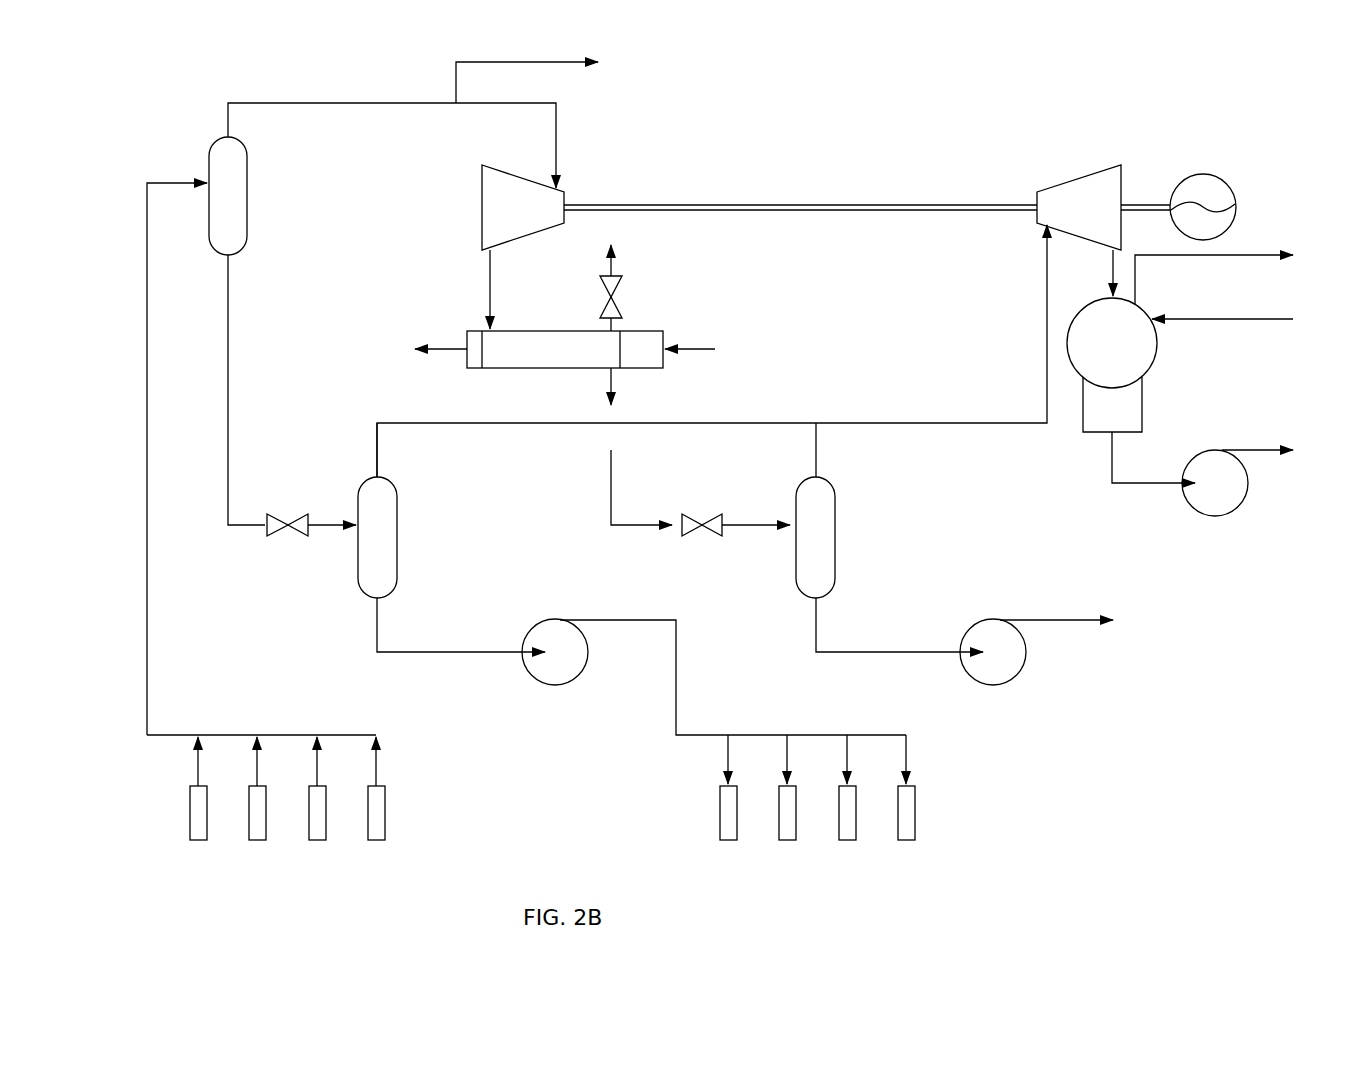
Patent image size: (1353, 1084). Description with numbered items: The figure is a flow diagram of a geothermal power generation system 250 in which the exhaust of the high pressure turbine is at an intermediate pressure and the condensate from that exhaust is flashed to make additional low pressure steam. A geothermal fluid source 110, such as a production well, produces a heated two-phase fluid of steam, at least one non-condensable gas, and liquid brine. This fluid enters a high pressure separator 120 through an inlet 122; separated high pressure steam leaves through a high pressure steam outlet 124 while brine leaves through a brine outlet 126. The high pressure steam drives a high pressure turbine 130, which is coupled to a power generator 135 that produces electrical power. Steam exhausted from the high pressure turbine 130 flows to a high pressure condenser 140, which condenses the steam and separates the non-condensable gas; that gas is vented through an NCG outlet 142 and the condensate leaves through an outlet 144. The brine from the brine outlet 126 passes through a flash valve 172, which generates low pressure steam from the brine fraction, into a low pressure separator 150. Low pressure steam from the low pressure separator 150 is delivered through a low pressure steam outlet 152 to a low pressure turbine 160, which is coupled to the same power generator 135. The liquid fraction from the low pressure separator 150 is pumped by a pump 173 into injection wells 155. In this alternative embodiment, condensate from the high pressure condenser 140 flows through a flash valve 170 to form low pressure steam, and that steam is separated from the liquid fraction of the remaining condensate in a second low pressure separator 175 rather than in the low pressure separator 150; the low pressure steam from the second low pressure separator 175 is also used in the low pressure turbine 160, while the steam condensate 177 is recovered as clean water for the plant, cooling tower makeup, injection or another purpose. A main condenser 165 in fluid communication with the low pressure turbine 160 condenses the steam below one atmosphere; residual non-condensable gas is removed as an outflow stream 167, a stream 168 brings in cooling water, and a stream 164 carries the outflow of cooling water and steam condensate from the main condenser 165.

The geothermal fluid source 110 is at (180, 814).
The high pressure separator 120 is at (236, 152).
The inlet 122 is at (207, 180).
The high pressure steam outlet 124 is at (232, 136).
The brine outlet 126 is at (232, 257).
The high pressure turbine 130 is at (497, 181).
The power generator 135 is at (1190, 183).
The high pressure condenser 140 is at (534, 362).
The NCG outlet 142 is at (614, 328).
The outlet 144 is at (614, 370).
The low pressure separator 150 is at (390, 495).
The low pressure steam outlet 152 is at (378, 478).
The injection wells 155 is at (710, 814).
The low pressure turbine 160 is at (1078, 187).
The outflow stream 164 is at (1112, 464).
The main condenser 165 is at (1142, 358).
The outflow stream 167 is at (1251, 254).
The cooling water stream 168 is at (1251, 318).
The flash valve 170 is at (698, 520).
The flash valve 172 is at (281, 533).
The pump 173 is at (543, 632).
The second low pressure separator 175 is at (828, 495).
The steam condensate 177 is at (1052, 617).
The geothermal power generation system 250 is at (1156, 98).